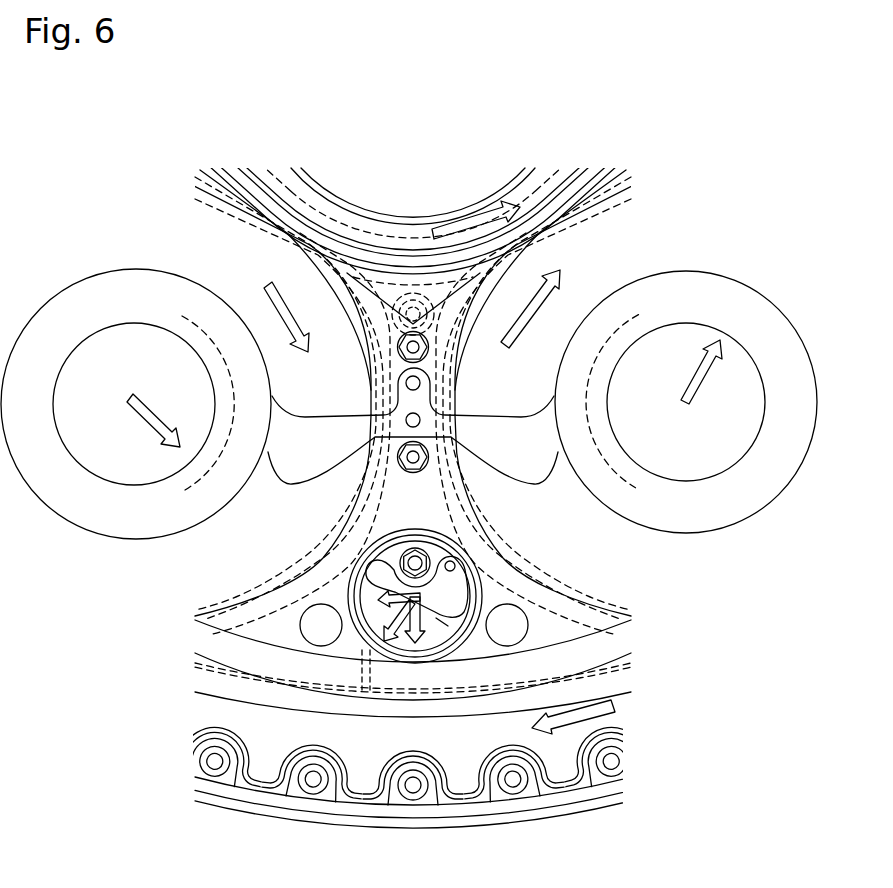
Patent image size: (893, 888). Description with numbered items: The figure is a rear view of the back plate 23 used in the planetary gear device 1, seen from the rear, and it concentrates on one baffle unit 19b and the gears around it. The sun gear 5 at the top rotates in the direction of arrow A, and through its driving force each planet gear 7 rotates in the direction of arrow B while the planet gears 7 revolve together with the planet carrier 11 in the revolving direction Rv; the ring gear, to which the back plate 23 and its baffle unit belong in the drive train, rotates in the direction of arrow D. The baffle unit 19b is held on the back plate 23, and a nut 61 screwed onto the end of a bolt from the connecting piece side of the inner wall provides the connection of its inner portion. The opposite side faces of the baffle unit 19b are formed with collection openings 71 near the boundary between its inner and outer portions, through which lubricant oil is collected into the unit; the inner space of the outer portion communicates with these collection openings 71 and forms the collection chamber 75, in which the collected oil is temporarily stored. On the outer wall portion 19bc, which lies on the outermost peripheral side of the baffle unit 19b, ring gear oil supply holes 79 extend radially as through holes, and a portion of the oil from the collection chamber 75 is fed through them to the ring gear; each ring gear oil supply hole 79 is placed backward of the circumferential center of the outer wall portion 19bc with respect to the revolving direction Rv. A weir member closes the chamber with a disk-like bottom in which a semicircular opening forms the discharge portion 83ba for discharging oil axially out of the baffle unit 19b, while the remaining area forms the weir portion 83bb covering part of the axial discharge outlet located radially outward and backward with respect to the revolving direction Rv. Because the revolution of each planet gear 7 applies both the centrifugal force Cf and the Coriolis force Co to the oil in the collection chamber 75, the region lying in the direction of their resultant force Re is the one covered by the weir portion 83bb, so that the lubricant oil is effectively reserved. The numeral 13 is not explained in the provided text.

The planetary gear device 1 is at (147, 164).
The sun gear 5 is at (548, 180).
The guide roller 13 is at (599, 345).
The planet gear 7 is at (236, 598).
The collection opening 71 is at (340, 521).
The nut 61 is at (408, 548).
The collection chamber 75 is at (482, 590).
The discharge portion 83ba is at (455, 573).
The weir portion 83bb is at (442, 622).
The baffle unit 19b is at (602, 635).
The outer wall portion 19bc is at (604, 690).
The ring gear oil supply hole 79 is at (362, 673).
The back plate 23 is at (412, 801).
The planet carrier 11 is at (582, 816).
The rotation direction of the sun gear A is at (470, 226).
The rotation direction of the planet gear B is at (310, 327).
The revolving direction Rv is at (135, 418).
The rotation direction of the ring gear D is at (605, 728).
The Coriolis force Co is at (408, 628).
The centrifugal force Cf is at (430, 630).
The resultant force Re is at (402, 636).